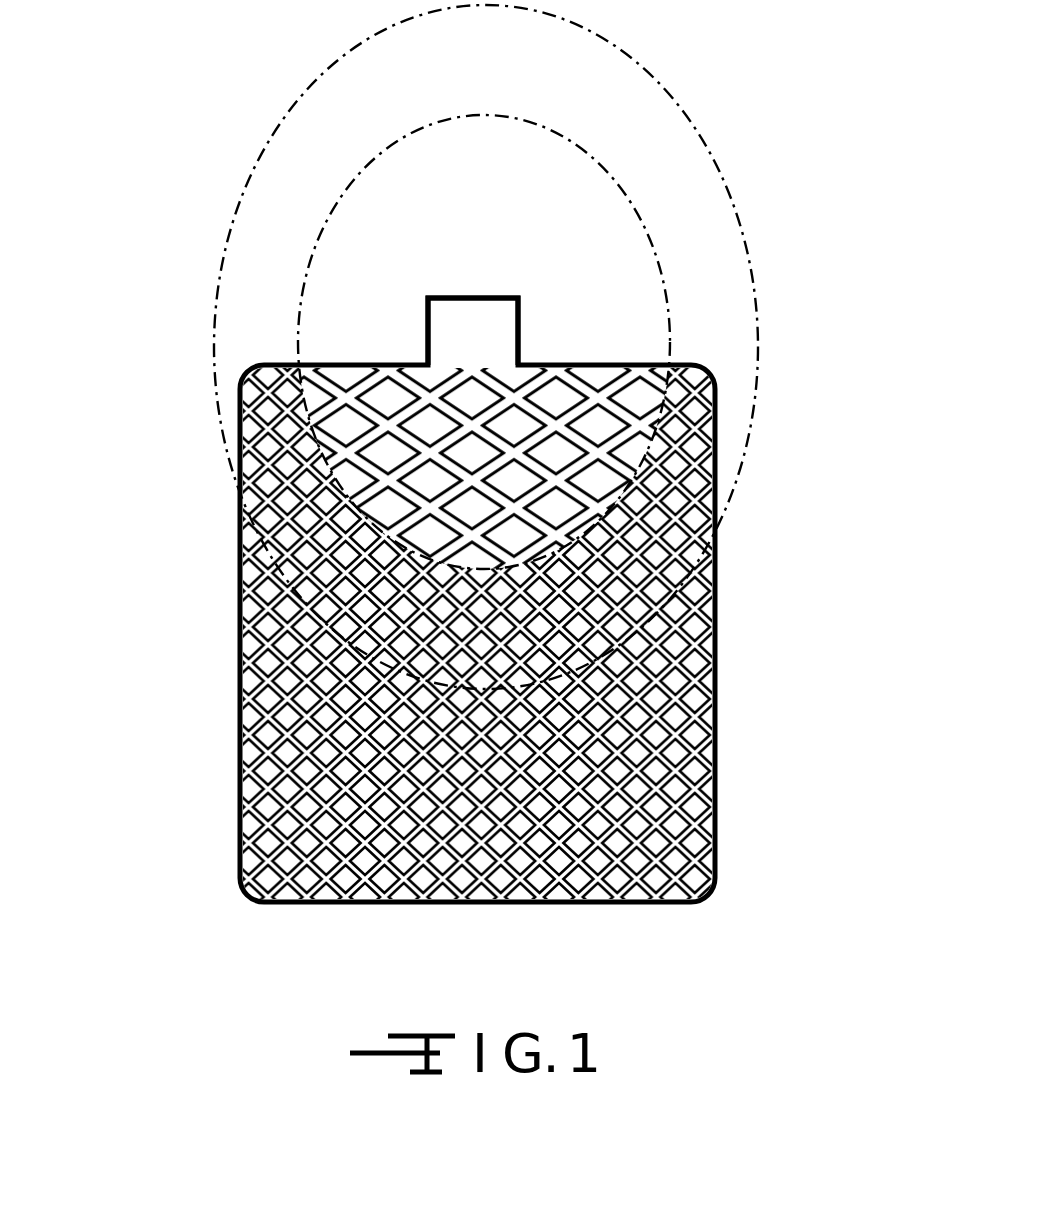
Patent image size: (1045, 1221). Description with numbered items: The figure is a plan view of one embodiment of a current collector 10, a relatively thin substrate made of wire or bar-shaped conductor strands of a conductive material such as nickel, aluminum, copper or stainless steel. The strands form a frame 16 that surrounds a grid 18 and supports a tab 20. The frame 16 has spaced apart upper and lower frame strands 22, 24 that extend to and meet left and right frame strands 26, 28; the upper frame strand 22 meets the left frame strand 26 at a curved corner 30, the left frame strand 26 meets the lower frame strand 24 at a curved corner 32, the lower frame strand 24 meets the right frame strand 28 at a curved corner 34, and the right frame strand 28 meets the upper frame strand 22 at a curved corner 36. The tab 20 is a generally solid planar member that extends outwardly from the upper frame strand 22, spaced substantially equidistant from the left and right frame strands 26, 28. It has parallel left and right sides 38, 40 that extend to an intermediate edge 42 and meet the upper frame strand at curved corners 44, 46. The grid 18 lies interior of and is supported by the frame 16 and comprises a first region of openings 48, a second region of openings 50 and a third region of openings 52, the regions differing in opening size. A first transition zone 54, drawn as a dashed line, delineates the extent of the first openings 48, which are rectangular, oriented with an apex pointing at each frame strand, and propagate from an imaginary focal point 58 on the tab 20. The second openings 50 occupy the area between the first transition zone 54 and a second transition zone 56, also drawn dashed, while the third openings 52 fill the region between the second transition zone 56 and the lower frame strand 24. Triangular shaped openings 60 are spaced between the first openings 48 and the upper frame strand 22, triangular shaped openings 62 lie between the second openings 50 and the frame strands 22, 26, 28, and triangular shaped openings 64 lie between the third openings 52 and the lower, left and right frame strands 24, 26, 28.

The current collector 10 is at (842, 544).
The frame 16 is at (718, 428).
The grid 18 is at (228, 462).
The tab 20 is at (520, 298).
The upper frame strand 22 is at (352, 368).
The lower frame strand 24 is at (372, 903).
The left frame strand 26 is at (240, 685).
The right frame strand 28 is at (717, 582).
The curved corner 30 is at (243, 378).
The curved corner 32 is at (244, 900).
The curved corner 34 is at (716, 896).
The curved corner 36 is at (716, 370).
The left tab side 38 is at (428, 322).
The right tab side 40 is at (522, 335).
The intermediate edge 42 is at (484, 326).
The curved corner 44 is at (428, 362).
The curved corner 46 is at (520, 365).
The first openings 48 is at (583, 395).
The second openings 50 is at (700, 533).
The third openings 52 is at (708, 654).
The first transition zone 54 is at (672, 292).
The second transition zone 56 is at (758, 278).
The imaginary focal point 58 is at (468, 368).
The triangular shaped openings 60 is at (341, 380).
The triangular shaped openings 62 is at (284, 380).
The triangular shaped openings 64 is at (248, 803).